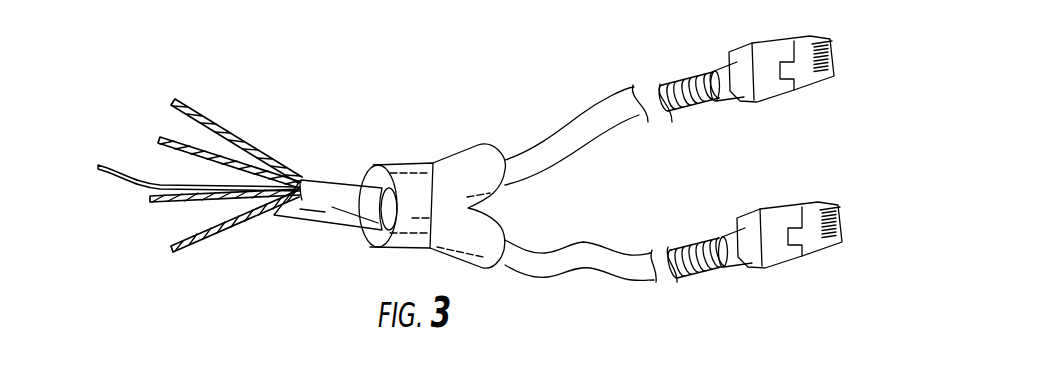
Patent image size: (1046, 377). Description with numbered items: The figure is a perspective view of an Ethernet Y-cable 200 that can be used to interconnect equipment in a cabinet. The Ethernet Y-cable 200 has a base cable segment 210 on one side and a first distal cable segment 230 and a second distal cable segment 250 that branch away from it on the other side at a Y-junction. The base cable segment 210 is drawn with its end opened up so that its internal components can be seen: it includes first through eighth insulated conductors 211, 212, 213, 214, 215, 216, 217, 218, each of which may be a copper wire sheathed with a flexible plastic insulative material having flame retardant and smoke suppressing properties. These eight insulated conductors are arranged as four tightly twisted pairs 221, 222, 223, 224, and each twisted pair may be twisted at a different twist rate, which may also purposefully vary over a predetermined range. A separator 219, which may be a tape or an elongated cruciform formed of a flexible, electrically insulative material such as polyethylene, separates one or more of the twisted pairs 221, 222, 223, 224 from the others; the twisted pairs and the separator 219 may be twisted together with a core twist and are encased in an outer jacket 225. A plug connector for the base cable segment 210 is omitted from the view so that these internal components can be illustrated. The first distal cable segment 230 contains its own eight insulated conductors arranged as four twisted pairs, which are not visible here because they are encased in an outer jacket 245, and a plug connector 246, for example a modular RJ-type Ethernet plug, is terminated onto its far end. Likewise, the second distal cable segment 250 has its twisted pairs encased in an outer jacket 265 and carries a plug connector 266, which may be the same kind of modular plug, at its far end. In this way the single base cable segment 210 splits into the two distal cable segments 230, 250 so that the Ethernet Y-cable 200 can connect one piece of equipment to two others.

The Ethernet Y-cable 200 is at (457, 97).
The base cable segment 210 is at (345, 227).
The insulated conductor 211 is at (172, 253).
The insulated conductor 212 is at (170, 250).
The insulated conductor 213 is at (150, 200).
The insulated conductor 214 is at (150, 198).
The insulated conductor 215 is at (157, 142).
The insulated conductor 216 is at (160, 139).
The insulated conductor 217 is at (171, 102).
The insulated conductor 218 is at (176, 100).
The separator 219 is at (98, 165).
The twisted pair 221 is at (143, 245).
The twisted pair 222 is at (135, 201).
The twisted pair 223 is at (148, 139).
The twisted pair 224 is at (158, 98).
The outer jacket 225 is at (322, 189).
The first distal cable segment 230 is at (598, 104).
The outer jacket 245 is at (552, 147).
The plug connector 246 is at (742, 45).
The second distal cable segment 250 is at (584, 242).
The outer jacket 265 is at (548, 256).
The plug connector 266 is at (750, 211).